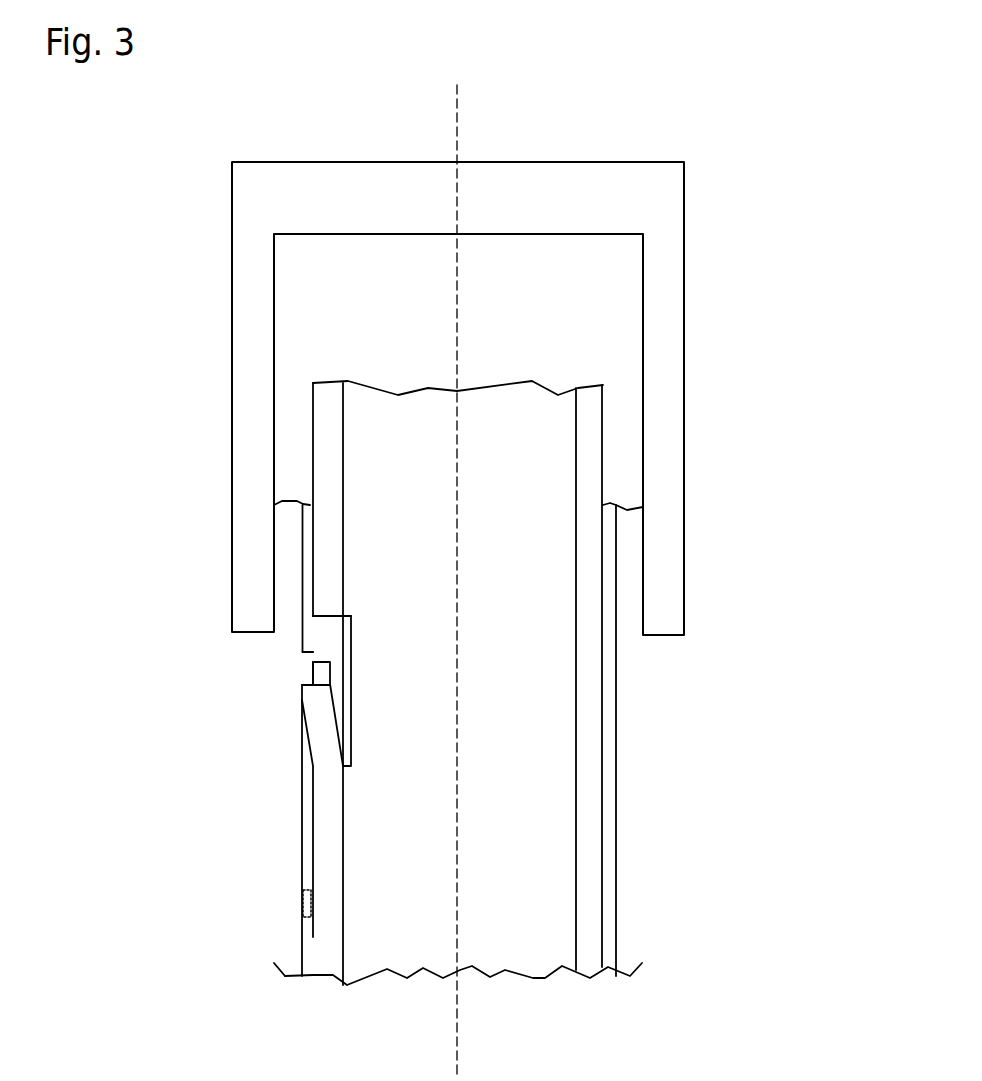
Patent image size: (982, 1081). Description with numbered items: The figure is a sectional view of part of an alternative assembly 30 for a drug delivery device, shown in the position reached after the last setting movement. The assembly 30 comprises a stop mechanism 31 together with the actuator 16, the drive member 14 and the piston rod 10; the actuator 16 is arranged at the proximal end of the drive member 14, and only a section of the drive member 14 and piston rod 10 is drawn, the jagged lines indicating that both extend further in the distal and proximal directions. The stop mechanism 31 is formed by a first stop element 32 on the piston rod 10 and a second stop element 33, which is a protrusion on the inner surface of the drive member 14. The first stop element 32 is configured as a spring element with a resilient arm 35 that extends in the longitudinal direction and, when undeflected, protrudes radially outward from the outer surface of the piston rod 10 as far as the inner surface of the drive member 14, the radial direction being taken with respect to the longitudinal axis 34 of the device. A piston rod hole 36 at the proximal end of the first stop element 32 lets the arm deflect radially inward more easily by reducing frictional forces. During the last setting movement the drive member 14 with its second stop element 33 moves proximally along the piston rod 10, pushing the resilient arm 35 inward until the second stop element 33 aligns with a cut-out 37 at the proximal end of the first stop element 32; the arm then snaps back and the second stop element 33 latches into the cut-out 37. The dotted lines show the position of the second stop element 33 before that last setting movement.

The piston rod 10 is at (527, 867).
The drive member 14 is at (622, 630).
The actuator 16 is at (645, 204).
The assembly 30 is at (227, 597).
The stop mechanism 31 is at (282, 686).
The first stop element 32 is at (315, 714).
The second stop element 33 is at (300, 664).
The longitudinal axis 34 is at (457, 161).
The resilient arm 35 is at (315, 700).
The piston rod hole 36 is at (327, 630).
The cut-out 37 is at (317, 682).